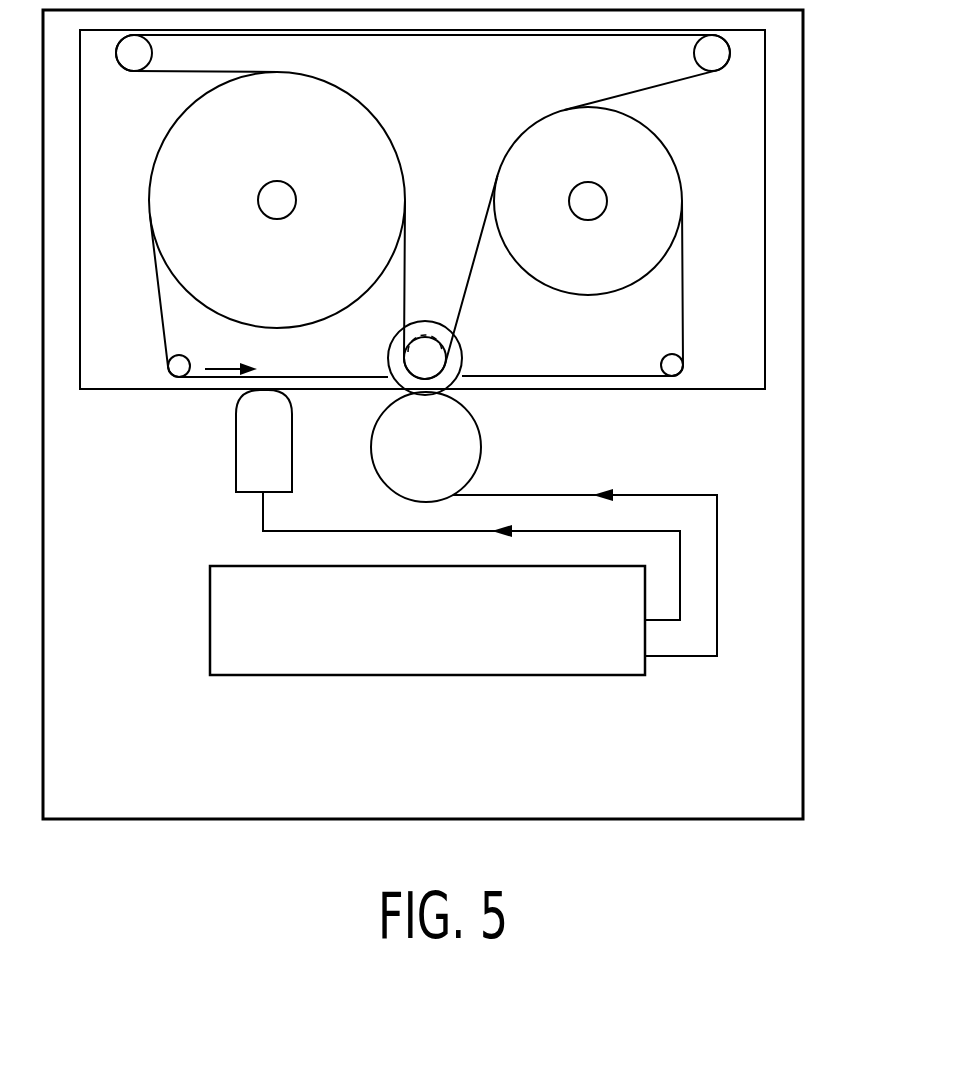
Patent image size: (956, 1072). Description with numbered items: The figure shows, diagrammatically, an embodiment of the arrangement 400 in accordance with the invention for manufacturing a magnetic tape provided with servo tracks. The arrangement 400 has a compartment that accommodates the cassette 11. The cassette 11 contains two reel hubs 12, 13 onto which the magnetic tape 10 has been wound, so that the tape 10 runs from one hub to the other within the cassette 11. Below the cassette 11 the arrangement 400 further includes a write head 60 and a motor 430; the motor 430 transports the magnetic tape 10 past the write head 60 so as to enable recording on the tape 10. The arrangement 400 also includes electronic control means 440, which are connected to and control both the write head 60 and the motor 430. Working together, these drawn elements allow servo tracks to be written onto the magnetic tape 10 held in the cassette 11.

The magnetic tape 10 is at (160, 338).
The cassette 11 is at (765, 176).
The reel hub 12 is at (277, 181).
The reel hub 13 is at (588, 182).
The write head 60 is at (236, 442).
The arrangement 400 is at (803, 493).
The motor 430 is at (481, 448).
The electronic control means 440 is at (458, 638).